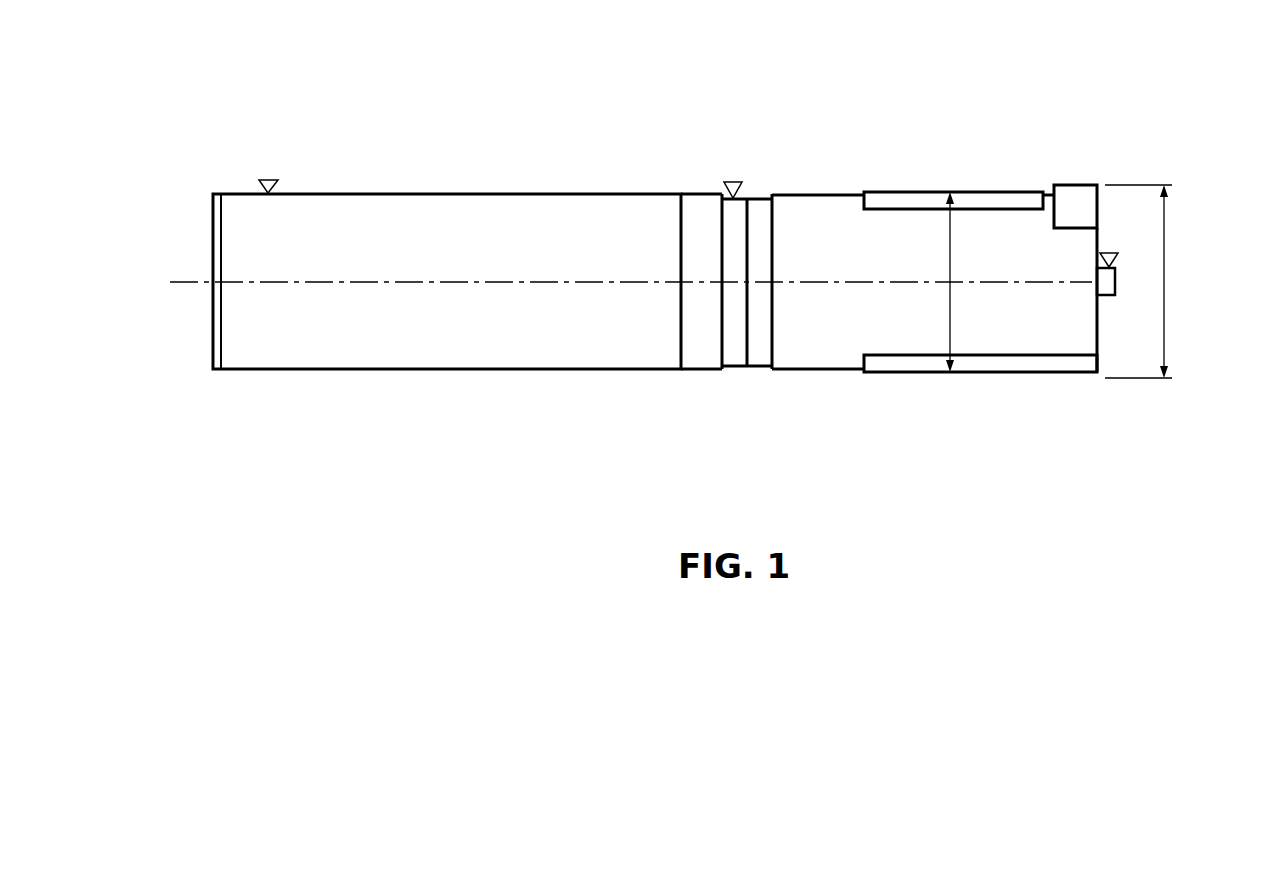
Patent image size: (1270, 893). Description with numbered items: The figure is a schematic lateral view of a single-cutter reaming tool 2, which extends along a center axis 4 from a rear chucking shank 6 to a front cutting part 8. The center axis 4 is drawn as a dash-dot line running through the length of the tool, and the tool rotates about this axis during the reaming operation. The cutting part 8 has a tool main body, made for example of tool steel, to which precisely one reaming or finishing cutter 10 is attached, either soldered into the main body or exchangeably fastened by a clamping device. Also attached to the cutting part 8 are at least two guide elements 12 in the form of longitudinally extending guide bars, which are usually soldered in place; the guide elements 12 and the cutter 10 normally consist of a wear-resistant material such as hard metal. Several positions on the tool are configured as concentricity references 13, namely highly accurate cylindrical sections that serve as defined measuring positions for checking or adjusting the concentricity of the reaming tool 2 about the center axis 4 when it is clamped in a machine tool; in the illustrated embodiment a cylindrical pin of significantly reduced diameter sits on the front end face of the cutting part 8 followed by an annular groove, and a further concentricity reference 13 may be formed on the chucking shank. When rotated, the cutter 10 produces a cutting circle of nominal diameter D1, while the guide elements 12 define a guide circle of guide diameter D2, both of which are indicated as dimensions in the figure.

The single-cutter reaming tool 2 is at (672, 131).
The center axis 4 is at (186, 282).
The chucking shank 6 is at (393, 360).
The cutting part 8 is at (816, 360).
The reaming or finishing cutter 10 is at (1074, 197).
The guide elements 12 is at (900, 197).
The concentricity references 13 is at (277, 180).
The nominal diameter D1 is at (1163, 265).
The guide diameter D2 is at (952, 238).